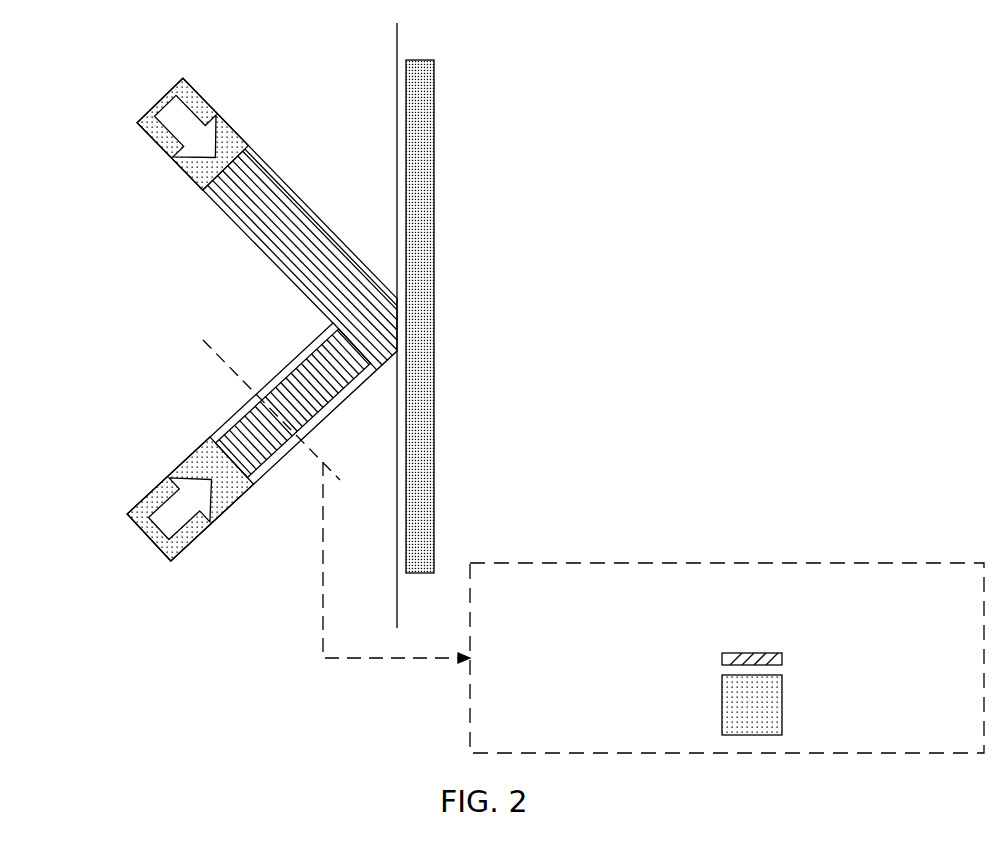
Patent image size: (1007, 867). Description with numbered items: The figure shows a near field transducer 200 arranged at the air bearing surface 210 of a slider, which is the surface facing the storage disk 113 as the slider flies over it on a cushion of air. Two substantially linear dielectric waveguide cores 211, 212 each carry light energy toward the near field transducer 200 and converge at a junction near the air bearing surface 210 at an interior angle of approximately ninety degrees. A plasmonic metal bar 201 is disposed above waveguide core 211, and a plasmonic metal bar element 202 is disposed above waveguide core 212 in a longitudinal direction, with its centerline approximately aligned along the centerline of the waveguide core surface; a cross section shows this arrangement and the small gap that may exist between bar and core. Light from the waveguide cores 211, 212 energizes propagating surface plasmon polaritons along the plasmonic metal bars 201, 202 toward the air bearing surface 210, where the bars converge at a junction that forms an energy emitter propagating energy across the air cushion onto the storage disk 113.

The near field transducer 200 is at (727, 111).
The plasmonic metal bar 201 is at (221, 198).
The plasmonic metal bar element 202 is at (252, 472).
The air bearing surface 210 is at (402, 36).
The dielectric waveguide core 211 is at (158, 99).
The dielectric waveguide core 212 is at (122, 514).
The storage disk 113 is at (436, 283).